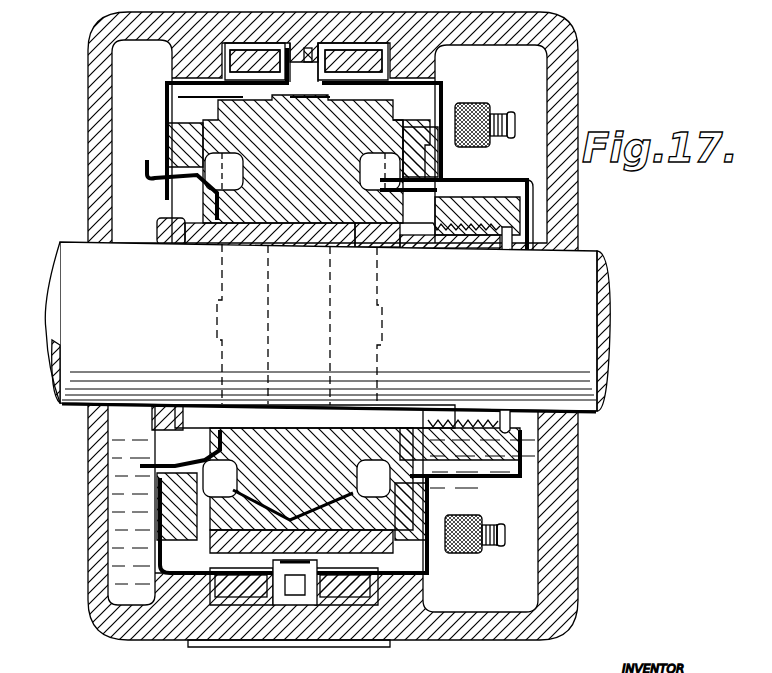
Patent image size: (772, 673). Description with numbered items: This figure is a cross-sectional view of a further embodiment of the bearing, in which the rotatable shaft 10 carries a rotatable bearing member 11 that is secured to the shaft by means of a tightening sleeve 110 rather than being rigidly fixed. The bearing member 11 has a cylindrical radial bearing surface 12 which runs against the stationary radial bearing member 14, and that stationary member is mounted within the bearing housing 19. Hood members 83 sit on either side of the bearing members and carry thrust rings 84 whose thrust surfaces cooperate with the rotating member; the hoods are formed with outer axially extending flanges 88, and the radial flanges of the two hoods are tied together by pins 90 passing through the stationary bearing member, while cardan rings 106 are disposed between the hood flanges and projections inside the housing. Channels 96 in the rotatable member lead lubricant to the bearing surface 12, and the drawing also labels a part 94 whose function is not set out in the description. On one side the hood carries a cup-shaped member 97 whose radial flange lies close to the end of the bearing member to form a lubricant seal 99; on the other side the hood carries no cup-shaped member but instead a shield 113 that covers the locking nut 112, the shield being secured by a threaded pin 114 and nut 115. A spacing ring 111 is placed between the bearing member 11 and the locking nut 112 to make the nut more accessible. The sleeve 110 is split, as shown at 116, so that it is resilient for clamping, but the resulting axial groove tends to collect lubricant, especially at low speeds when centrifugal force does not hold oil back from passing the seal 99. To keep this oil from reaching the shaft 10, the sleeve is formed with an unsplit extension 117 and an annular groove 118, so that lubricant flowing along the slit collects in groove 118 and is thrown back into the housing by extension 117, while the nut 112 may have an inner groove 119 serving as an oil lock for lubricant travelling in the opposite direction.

The rotatable shaft 10 is at (590, 262).
The rotatable bearing member 11 is at (345, 246).
The cylindrical radial bearing surface 12 is at (385, 150).
The stationary radial bearing member 14 is at (318, 114).
The bearing housing 19 is at (88, 478).
The hood member 83 is at (442, 165).
The thrust ring 84 is at (172, 145).
The outer axial extending flange 88 is at (297, 60).
The pin 90 is at (297, 605).
The sealing member 94 is at (172, 118).
The channel 96 is at (280, 515).
The cup-shaped member 97 is at (160, 178).
The lubricant seal 99 is at (214, 450).
The cardan ring 106 is at (240, 600).
The tightening sleeve 110 is at (250, 245).
The spacing ring 111 is at (404, 246).
The locking nut 112 is at (472, 240).
The shield 113 is at (528, 185).
The threaded pin 114 is at (490, 550).
The nut 115 is at (465, 556).
The split 116 is at (286, 418).
The unsplit extension 117 is at (156, 420).
The annular groove 118 is at (190, 438).
The inner groove 119 is at (505, 413).